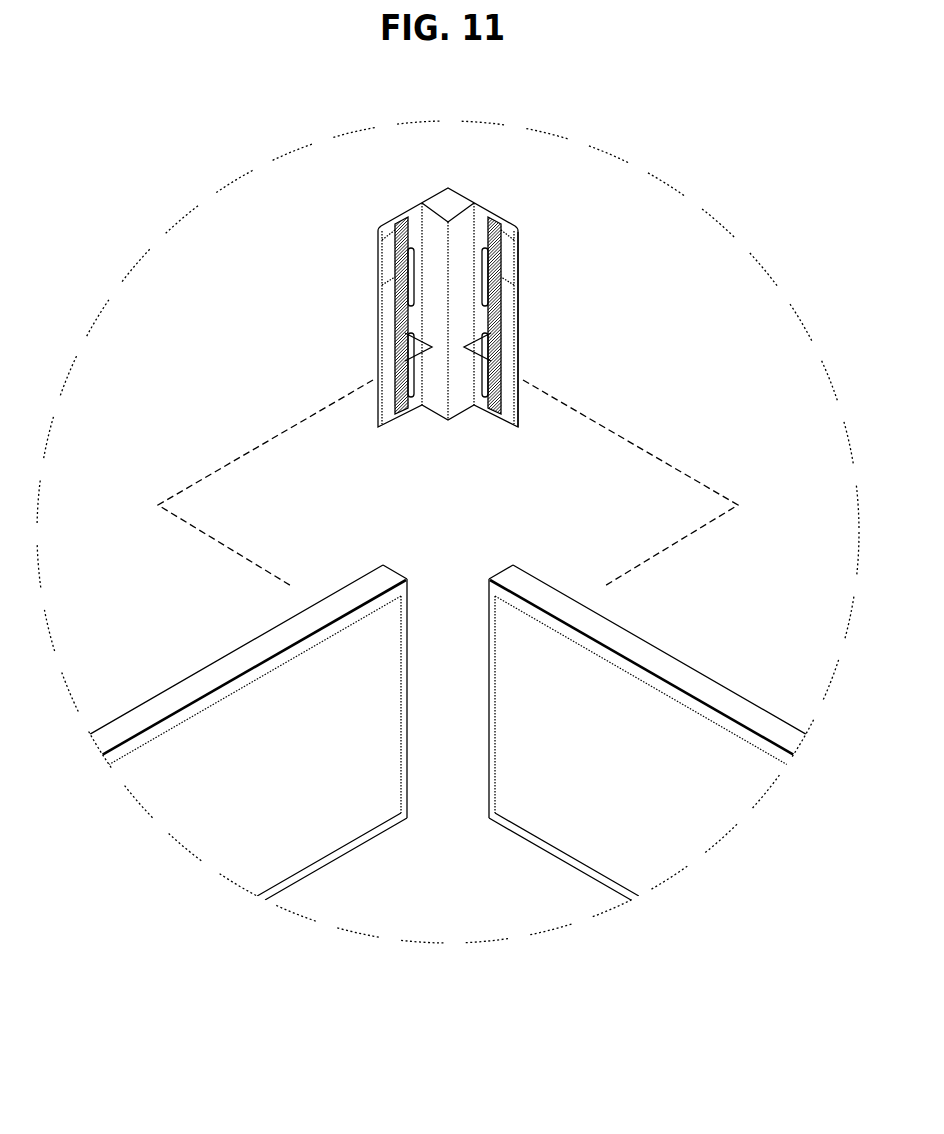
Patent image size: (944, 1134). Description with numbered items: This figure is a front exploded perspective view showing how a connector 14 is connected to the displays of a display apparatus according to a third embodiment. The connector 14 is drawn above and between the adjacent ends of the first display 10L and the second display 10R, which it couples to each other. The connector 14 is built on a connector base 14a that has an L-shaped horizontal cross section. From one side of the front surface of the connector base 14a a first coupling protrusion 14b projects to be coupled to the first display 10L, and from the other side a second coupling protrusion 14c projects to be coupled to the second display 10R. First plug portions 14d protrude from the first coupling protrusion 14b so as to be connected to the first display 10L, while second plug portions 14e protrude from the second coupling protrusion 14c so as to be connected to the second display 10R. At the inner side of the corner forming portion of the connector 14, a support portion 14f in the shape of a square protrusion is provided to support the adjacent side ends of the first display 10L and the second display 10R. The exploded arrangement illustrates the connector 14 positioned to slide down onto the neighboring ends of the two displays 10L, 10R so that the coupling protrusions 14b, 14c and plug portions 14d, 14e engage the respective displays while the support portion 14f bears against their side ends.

The connector 14 is at (530, 247).
The connector base 14a is at (515, 358).
The first coupling protrusion 14b is at (395, 240).
The second coupling protrusion 14c is at (485, 258).
The first plug portions 14d is at (397, 353).
The second plug portions 14e is at (499, 353).
The support portion 14f is at (457, 222).
The first display 10L is at (188, 650).
The second display 10R is at (698, 645).